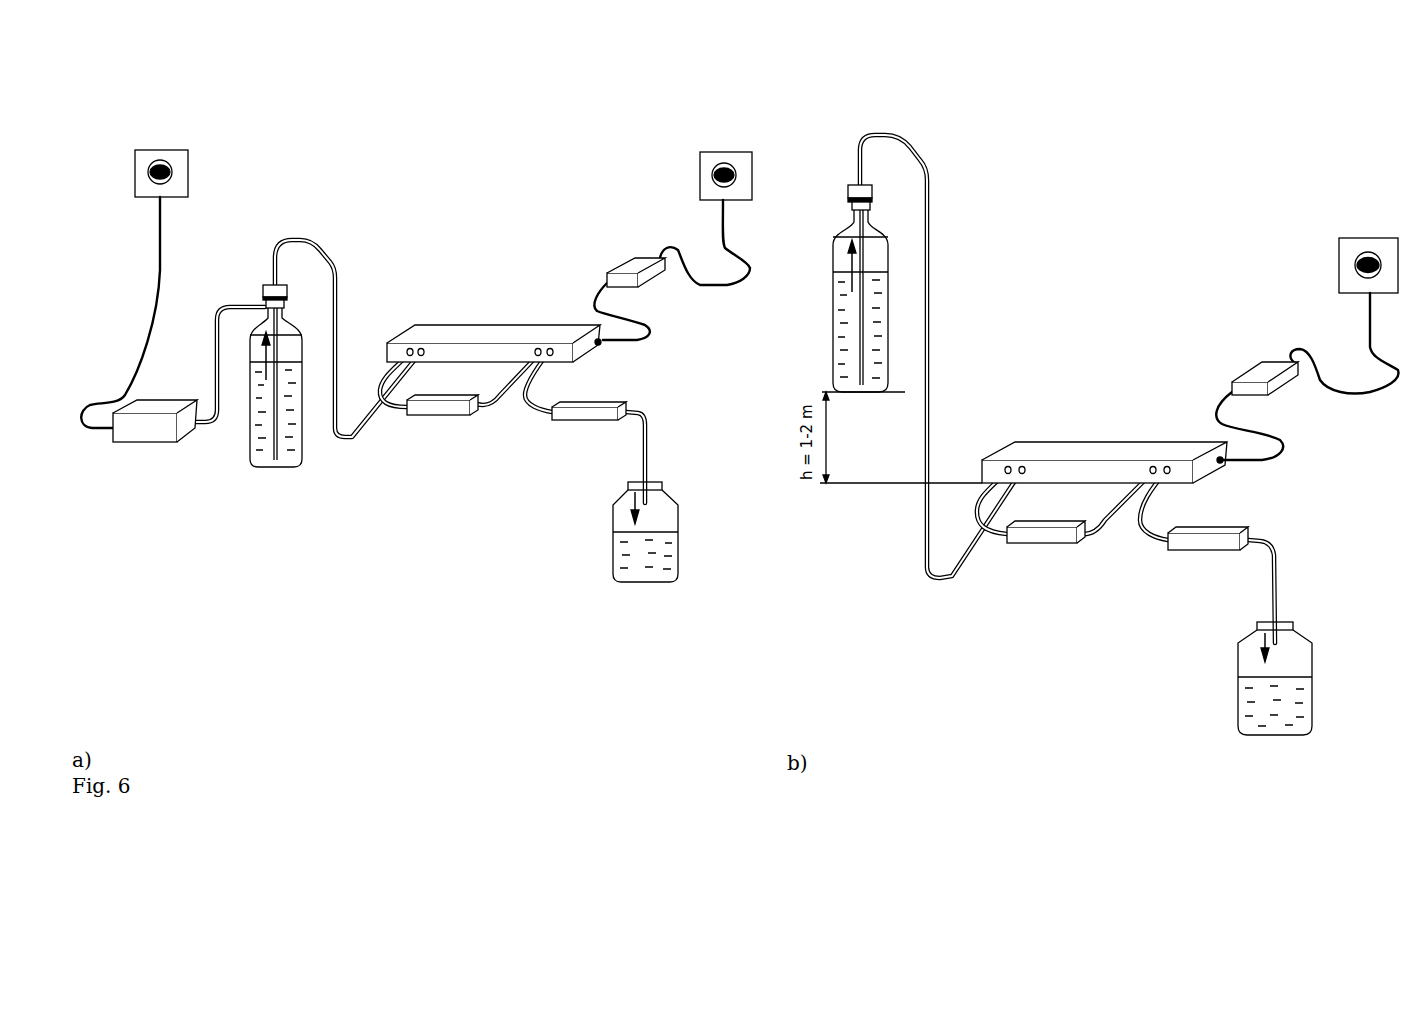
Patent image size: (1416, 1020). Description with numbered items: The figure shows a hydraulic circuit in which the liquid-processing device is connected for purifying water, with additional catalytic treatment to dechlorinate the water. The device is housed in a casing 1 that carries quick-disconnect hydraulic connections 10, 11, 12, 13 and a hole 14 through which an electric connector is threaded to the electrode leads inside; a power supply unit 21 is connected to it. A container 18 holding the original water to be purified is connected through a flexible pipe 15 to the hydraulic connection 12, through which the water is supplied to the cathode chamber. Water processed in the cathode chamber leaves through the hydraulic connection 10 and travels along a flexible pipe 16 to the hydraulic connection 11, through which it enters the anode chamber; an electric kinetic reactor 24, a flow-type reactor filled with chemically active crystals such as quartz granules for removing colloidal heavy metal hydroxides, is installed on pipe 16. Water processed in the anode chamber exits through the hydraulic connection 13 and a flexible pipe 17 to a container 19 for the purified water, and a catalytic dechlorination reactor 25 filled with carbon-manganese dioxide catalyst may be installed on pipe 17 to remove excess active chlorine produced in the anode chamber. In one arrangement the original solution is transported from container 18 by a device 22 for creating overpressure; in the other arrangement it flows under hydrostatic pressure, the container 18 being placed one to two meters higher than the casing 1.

The casing 1 is at (450, 335).
The hydraulic connection 10 is at (408, 350).
The hydraulic connection 11 is at (423, 350).
The hydraulic connection 12 is at (538, 350).
The hydraulic connection 13 is at (551, 350).
The hole for electric connector 14 is at (599, 345).
The flexible pipe 15 is at (320, 258).
The flexible pipe 16 is at (400, 410).
The flexible pipe 17 is at (643, 443).
The container for the original solution 18 is at (290, 433).
The container for the processed product 19 is at (613, 545).
The power supply unit 21 is at (628, 262).
The device for creating overpressure 22 is at (123, 432).
The electric kinetic reactor 24 is at (430, 408).
The catalytic dechlorination reactor 25 is at (570, 415).